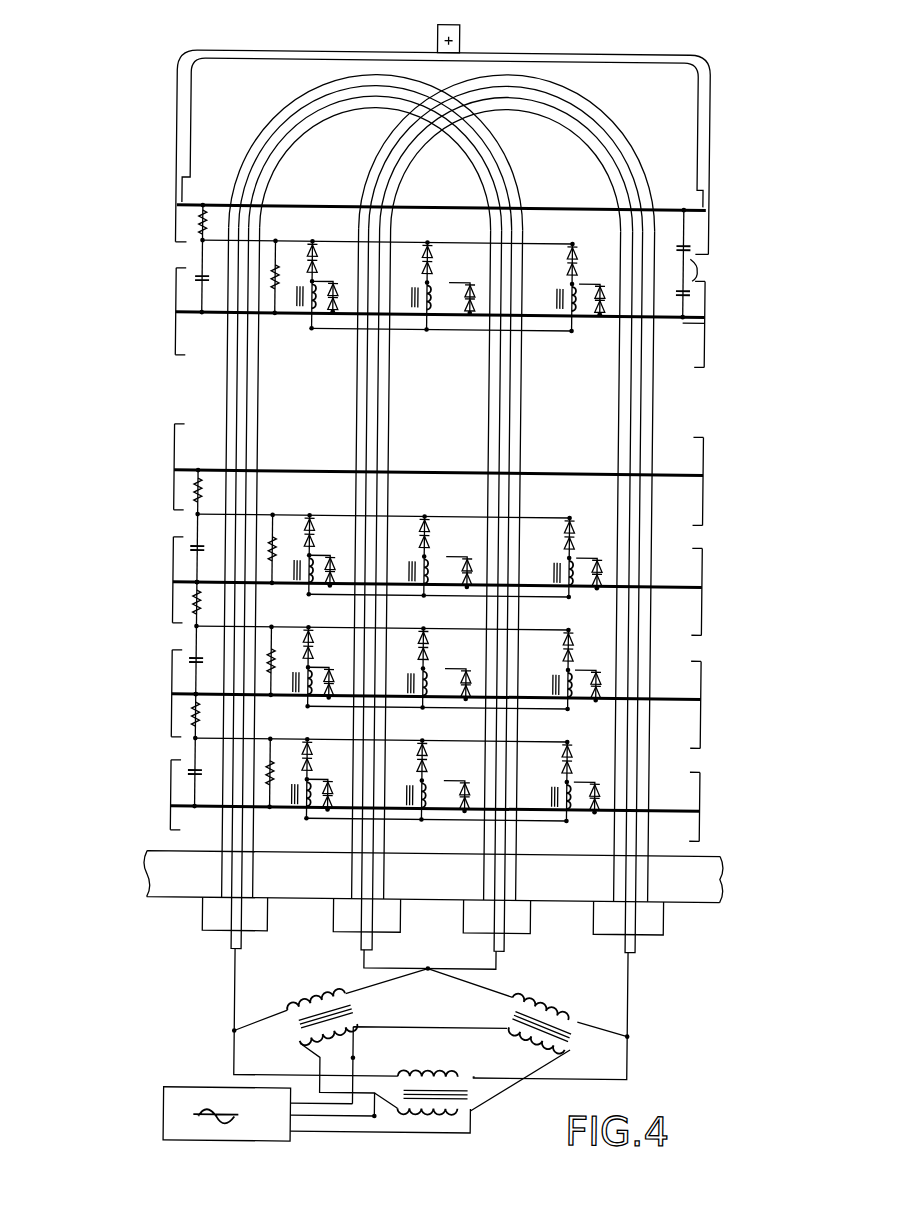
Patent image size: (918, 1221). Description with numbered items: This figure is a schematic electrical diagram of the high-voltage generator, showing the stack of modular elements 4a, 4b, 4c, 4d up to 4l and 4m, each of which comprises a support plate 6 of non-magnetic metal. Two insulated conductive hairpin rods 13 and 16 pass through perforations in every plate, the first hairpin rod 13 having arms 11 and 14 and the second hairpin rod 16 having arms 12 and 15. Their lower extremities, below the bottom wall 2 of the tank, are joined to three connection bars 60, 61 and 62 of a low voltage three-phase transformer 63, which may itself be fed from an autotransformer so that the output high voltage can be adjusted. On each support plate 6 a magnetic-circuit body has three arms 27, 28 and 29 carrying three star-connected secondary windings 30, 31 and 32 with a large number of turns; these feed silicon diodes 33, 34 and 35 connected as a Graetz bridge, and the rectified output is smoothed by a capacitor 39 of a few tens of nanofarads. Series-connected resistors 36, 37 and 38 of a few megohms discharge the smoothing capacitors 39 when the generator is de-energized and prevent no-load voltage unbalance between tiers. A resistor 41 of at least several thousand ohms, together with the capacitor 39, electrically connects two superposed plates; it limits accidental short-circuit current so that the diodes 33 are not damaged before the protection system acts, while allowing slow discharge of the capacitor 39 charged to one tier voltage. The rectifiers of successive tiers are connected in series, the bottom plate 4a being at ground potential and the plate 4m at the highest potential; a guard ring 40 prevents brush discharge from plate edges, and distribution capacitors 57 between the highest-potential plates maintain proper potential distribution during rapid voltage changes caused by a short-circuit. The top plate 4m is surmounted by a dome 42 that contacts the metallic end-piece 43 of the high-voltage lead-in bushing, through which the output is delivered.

The bottom wall 2 is at (177, 883).
The modular element 4a is at (192, 817).
The modular element 4b is at (195, 696).
The modular element 4c is at (199, 588).
The modular element 4d is at (198, 476).
The modular element 4l is at (207, 356).
The modular element 4m is at (222, 195).
The support plate 6 is at (676, 316).
The arm 11 is at (260, 439).
The arm 12 is at (410, 425).
The hairpin rod 13 is at (268, 125).
The arm 14 is at (525, 438).
The arm 15 is at (678, 432).
The second hairpin rod 16 is at (608, 104).
The arm 27 is at (292, 295).
The arm 28 is at (407, 296).
The arm 29 is at (547, 295).
The secondary winding 30 is at (330, 240).
The secondary winding 31 is at (436, 300).
The secondary winding 32 is at (578, 300).
The silicon diode 33 is at (315, 238).
The silicon diode 34 is at (473, 272).
The silicon diode 35 is at (575, 239).
The resistor 36 is at (279, 236).
The resistor 37 is at (272, 549).
The resistor 38 is at (271, 661).
The capacitor 39 is at (196, 279).
The guard ring 40 is at (709, 292).
The resistor 41 is at (203, 222).
The dome 42 is at (193, 48).
The metallic end-piece 43 is at (456, 38).
The distribution capacitor 57 is at (700, 264).
The connection bar 60 is at (243, 989).
The connection bar 61 is at (436, 965).
The connection bar 62 is at (636, 986).
The low voltage three-phase transformer 63 is at (371, 1008).